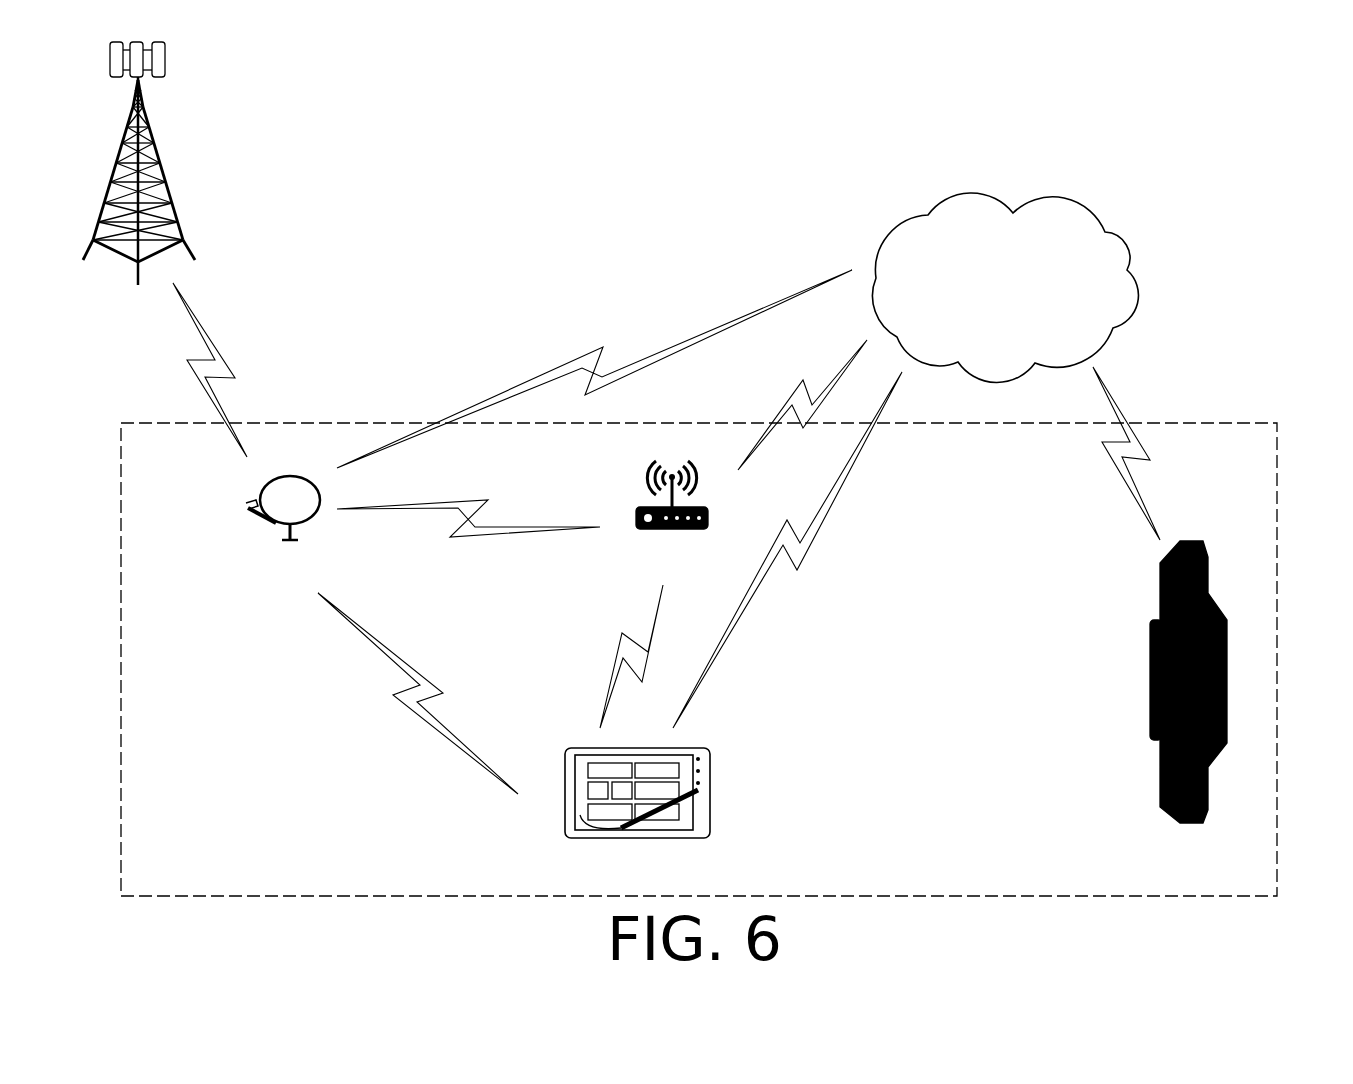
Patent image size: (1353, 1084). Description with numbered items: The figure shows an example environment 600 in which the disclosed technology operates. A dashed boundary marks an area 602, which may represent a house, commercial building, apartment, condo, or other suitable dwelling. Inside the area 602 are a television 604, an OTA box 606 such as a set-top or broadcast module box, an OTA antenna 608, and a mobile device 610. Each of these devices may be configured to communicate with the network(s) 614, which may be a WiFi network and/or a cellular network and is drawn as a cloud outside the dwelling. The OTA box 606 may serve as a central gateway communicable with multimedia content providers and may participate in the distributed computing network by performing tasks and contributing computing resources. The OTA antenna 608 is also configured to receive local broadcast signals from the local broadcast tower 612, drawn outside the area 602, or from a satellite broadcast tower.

The example environment 600 is at (1203, 155).
The area 602 is at (1226, 463).
The television 604 is at (1180, 868).
The OTA box 606 is at (655, 568).
The OTA antenna 608 is at (303, 566).
The mobile device 610 is at (620, 879).
The local broadcast tower 612 is at (121, 353).
The network(s) 614 is at (986, 329).